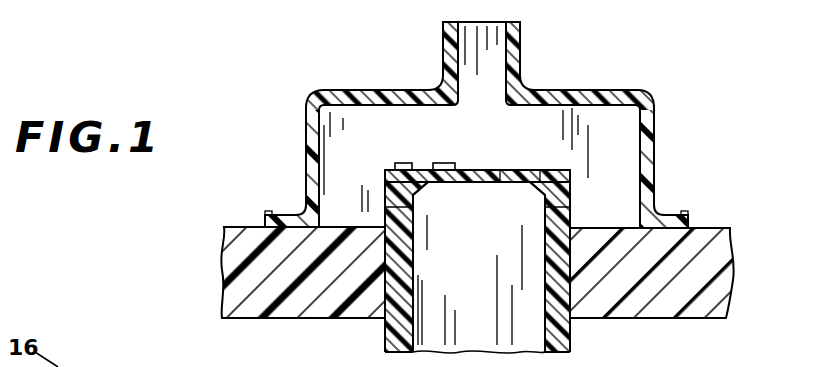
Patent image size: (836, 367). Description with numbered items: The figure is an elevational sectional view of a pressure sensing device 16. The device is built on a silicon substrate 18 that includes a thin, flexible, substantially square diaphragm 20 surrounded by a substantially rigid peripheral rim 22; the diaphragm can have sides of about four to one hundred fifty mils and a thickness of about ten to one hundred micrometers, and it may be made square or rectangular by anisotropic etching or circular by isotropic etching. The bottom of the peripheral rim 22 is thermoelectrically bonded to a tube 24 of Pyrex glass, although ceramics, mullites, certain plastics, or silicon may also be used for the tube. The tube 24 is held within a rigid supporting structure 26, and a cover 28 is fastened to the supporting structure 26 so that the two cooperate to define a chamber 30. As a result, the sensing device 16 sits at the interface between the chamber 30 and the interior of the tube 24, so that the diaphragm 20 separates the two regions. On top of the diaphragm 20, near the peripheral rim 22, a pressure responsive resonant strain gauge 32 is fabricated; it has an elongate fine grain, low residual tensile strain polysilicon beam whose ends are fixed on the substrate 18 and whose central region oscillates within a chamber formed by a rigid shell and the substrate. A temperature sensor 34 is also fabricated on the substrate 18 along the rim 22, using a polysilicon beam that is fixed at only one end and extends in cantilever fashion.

The pressure sensing device 16 is at (505, 187).
The silicon substrate 18 is at (519, 180).
The diaphragm 20 is at (492, 172).
The peripheral rim 22 is at (560, 186).
The tube 24 is at (567, 333).
The supporting structure 26 is at (332, 305).
The cover 28 is at (624, 91).
The chamber 30 is at (612, 153).
The resonant strain gauge 32 is at (440, 163).
The temperature sensor 34 is at (405, 163).